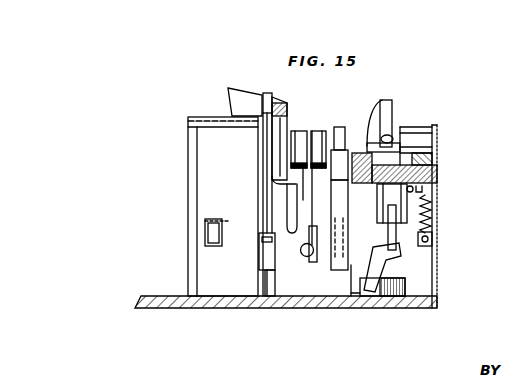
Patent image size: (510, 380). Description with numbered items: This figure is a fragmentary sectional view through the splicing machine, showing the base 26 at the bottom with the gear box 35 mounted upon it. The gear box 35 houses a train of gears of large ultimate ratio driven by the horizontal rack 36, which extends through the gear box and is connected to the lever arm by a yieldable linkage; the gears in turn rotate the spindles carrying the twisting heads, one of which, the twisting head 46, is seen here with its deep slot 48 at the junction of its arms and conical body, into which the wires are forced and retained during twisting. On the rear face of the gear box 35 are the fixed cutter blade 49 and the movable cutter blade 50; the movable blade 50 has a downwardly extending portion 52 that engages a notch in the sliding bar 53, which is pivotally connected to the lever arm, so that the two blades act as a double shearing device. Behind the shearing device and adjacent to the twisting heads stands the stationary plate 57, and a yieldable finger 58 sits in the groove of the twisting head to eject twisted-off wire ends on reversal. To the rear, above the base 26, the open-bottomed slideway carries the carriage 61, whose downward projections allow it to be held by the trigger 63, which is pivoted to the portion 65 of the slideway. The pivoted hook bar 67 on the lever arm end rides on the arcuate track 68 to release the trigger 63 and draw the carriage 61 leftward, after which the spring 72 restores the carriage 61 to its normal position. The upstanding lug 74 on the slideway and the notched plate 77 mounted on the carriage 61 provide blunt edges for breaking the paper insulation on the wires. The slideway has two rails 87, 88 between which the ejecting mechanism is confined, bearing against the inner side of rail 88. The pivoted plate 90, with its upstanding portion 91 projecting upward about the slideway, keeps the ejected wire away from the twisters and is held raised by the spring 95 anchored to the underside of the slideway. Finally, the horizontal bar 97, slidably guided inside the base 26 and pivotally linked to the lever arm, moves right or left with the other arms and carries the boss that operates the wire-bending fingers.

The base 26 is at (179, 295).
The gear box 35 is at (200, 170).
The horizontal rack 36 is at (205, 238).
The twisting head 46 is at (298, 135).
The slot 48 is at (322, 133).
The fixed cutter blade 49 is at (250, 100).
The movable cutter blade 50 is at (264, 95).
The downwardly extending portion 52 is at (273, 240).
The sliding bar 53 is at (267, 296).
The stationary plate 57 is at (279, 126).
The yieldable finger 58 is at (312, 206).
The carriage 61 is at (436, 172).
The trigger 63 is at (389, 233).
The portion of the slideway 65 is at (380, 203).
The hook bar 67 is at (389, 257).
The arcuate track 68 is at (389, 288).
The spring 72 is at (424, 190).
The upstanding lug 74 is at (347, 144).
The plate 77 is at (387, 108).
The rail 87 is at (434, 160).
The rail 88 is at (353, 168).
The plate 90 is at (433, 208).
The upstanding portion 91 is at (434, 126).
The spring 95 is at (434, 230).
The horizontal bar 97 is at (341, 272).